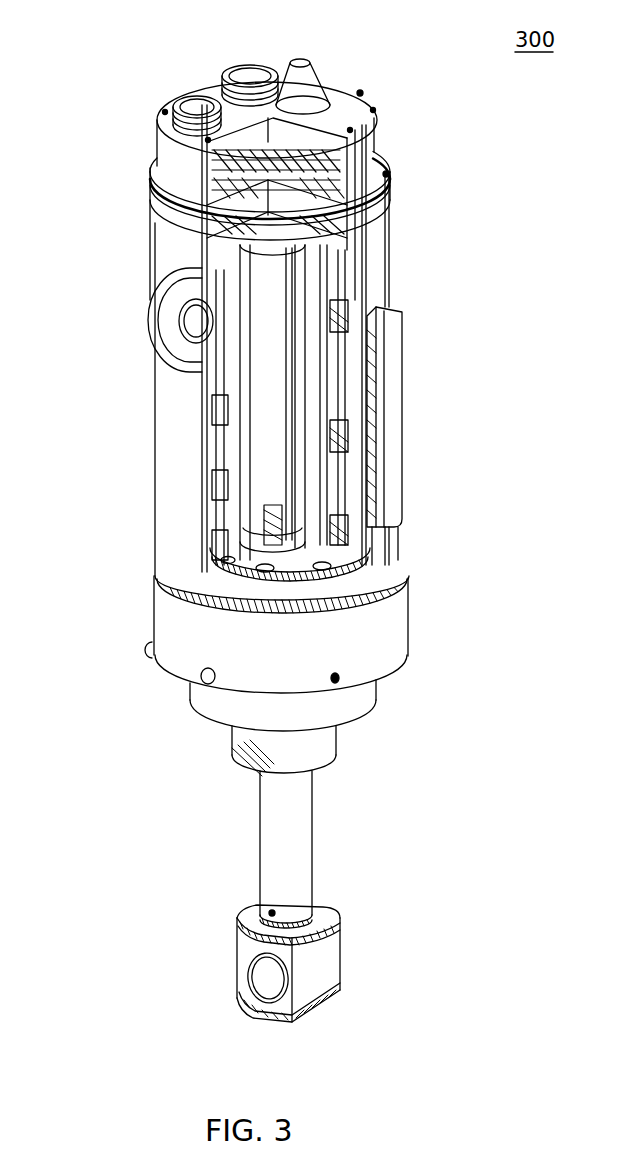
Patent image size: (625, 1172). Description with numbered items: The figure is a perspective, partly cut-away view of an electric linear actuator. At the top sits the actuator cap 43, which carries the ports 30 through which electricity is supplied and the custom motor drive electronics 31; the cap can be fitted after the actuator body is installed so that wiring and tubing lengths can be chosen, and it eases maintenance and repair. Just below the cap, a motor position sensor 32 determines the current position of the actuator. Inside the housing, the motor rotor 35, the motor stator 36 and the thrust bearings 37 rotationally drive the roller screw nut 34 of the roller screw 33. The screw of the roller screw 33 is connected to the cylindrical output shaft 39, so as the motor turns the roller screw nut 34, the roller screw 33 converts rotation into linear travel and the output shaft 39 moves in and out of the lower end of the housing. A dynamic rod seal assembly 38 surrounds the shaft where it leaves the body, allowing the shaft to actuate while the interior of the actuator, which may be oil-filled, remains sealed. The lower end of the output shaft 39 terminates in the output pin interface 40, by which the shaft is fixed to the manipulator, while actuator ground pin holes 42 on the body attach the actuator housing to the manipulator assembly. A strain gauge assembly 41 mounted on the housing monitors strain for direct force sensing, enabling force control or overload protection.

The ports 30 is at (208, 80).
The custom motor drive electronics 31 is at (210, 168).
The motor position sensor 32 is at (202, 235).
The roller screw 33 is at (267, 437).
The roller screw nut 34 is at (265, 447).
The motor rotor 35 is at (240, 490).
The motor stator 36 is at (215, 502).
The thrust bearings 37 is at (265, 645).
The dynamic rod seal assembly 38 is at (285, 747).
The cylindrical output shaft 39 is at (286, 847).
The output pin interface 40 is at (258, 943).
The strain gauge assembly 41 is at (380, 443).
The actuator ground pin holes 42 is at (198, 326).
The actuator cap 43 is at (362, 94).